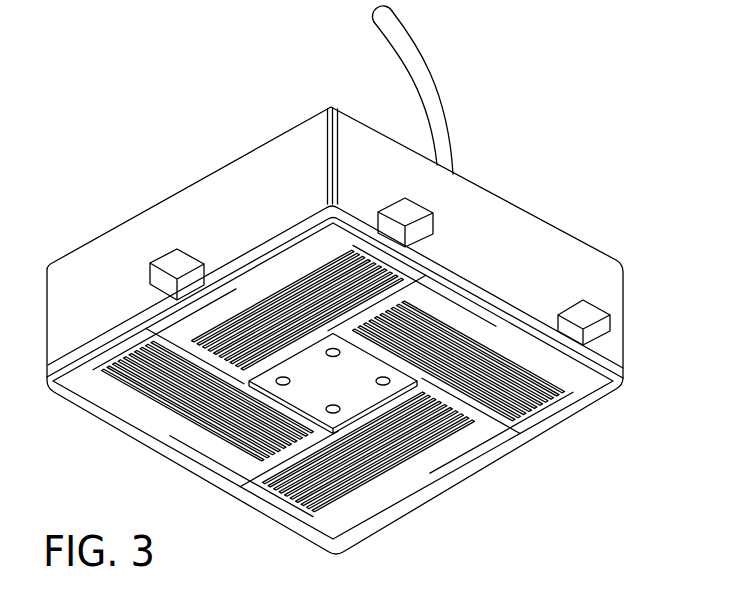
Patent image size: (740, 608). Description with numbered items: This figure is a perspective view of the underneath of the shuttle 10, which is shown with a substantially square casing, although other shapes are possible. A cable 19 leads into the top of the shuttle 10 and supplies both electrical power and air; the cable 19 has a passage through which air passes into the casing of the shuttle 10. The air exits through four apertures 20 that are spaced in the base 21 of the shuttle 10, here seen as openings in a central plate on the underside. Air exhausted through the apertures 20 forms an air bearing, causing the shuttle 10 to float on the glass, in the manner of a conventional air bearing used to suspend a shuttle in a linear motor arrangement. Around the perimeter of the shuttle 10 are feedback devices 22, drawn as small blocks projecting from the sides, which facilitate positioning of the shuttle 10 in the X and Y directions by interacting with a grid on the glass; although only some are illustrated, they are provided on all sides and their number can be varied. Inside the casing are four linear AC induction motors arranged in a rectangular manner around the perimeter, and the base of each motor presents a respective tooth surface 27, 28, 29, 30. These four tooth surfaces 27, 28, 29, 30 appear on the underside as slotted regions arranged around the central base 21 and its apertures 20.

The shuttle 10 is at (578, 245).
The cable 19 is at (423, 41).
The apertures 20 is at (217, 503).
The base 21 is at (360, 397).
The feedback devices 22 is at (155, 272).
The tooth surface 27 is at (538, 412).
The tooth surface 28 is at (320, 262).
The tooth surface 29 is at (155, 413).
The tooth surface 30 is at (452, 440).